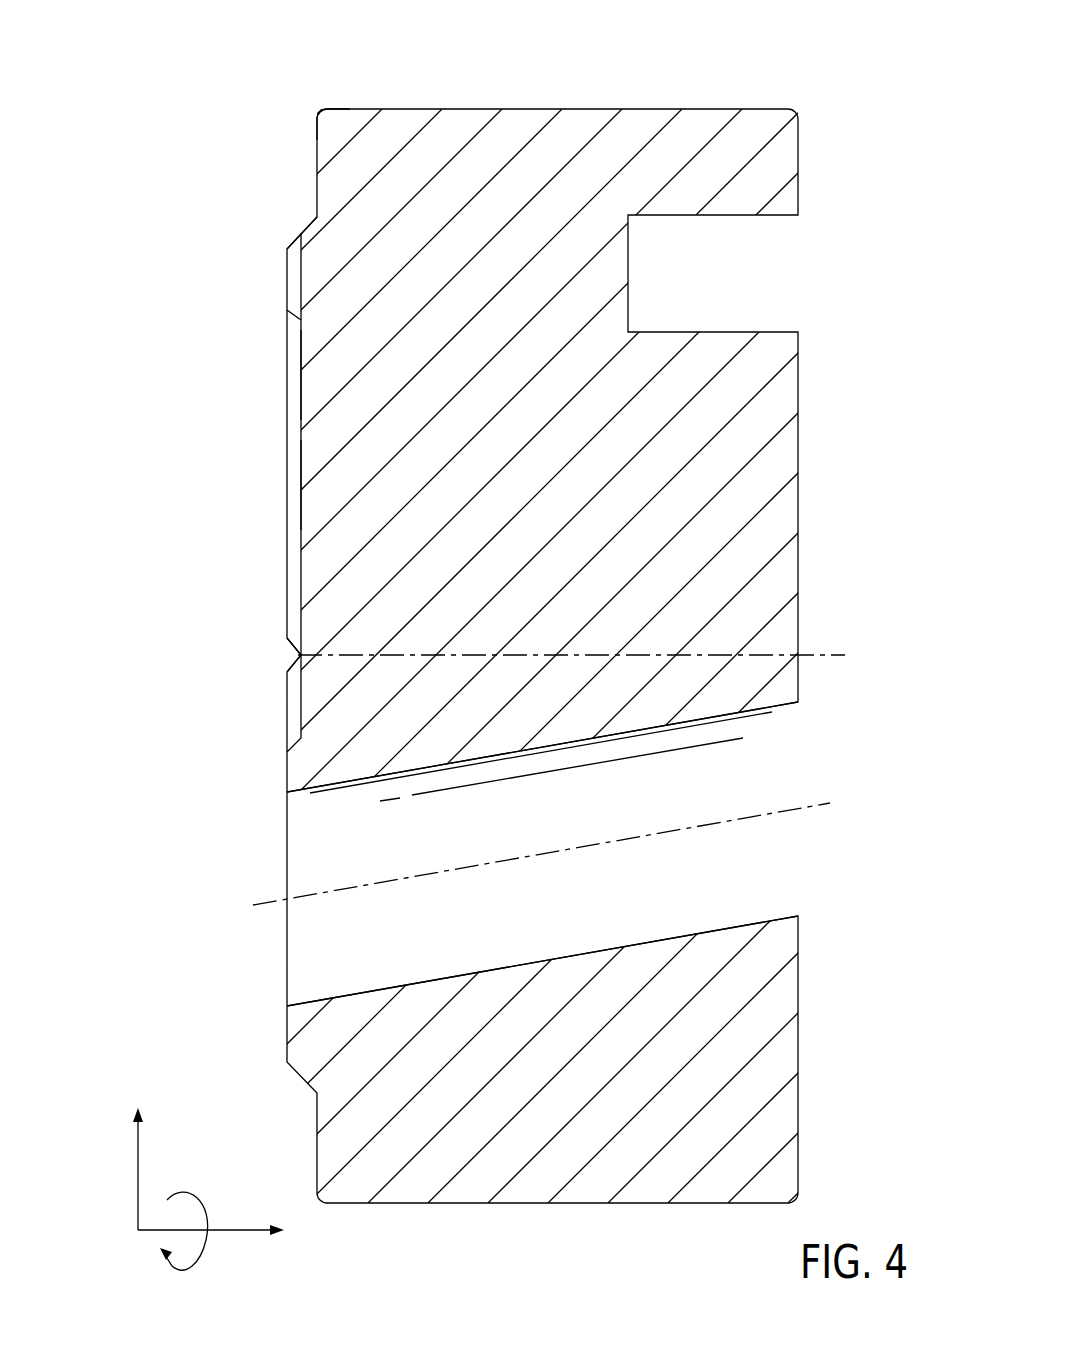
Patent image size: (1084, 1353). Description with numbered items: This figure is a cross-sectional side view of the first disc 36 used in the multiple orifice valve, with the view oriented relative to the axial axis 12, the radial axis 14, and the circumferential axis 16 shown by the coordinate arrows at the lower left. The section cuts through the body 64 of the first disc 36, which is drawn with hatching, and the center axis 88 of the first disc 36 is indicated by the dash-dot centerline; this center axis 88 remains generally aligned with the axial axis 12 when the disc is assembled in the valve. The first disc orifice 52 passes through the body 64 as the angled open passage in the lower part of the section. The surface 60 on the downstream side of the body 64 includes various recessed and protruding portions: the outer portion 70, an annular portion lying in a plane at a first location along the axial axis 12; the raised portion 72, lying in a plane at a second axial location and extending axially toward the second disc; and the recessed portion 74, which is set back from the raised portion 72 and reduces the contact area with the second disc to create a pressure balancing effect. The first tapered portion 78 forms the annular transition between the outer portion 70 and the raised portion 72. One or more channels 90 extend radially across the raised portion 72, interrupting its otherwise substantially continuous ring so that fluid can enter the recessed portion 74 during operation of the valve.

The first disc 36 is at (835, 48).
The body 64 is at (640, 115).
The surface 60 is at (186, 387).
The outer portion 70 is at (320, 150).
The first tapered portion 78 is at (302, 233).
The raised portion 72 is at (302, 373).
The recessed portion 74 is at (302, 488).
The channels 90 is at (300, 668).
The center axis 88 is at (842, 655).
The first disc orifice 52 is at (567, 827).
The radial axis 14 is at (138, 1176).
The axial axis 12 is at (224, 1232).
The circumferential axis 16 is at (183, 1273).